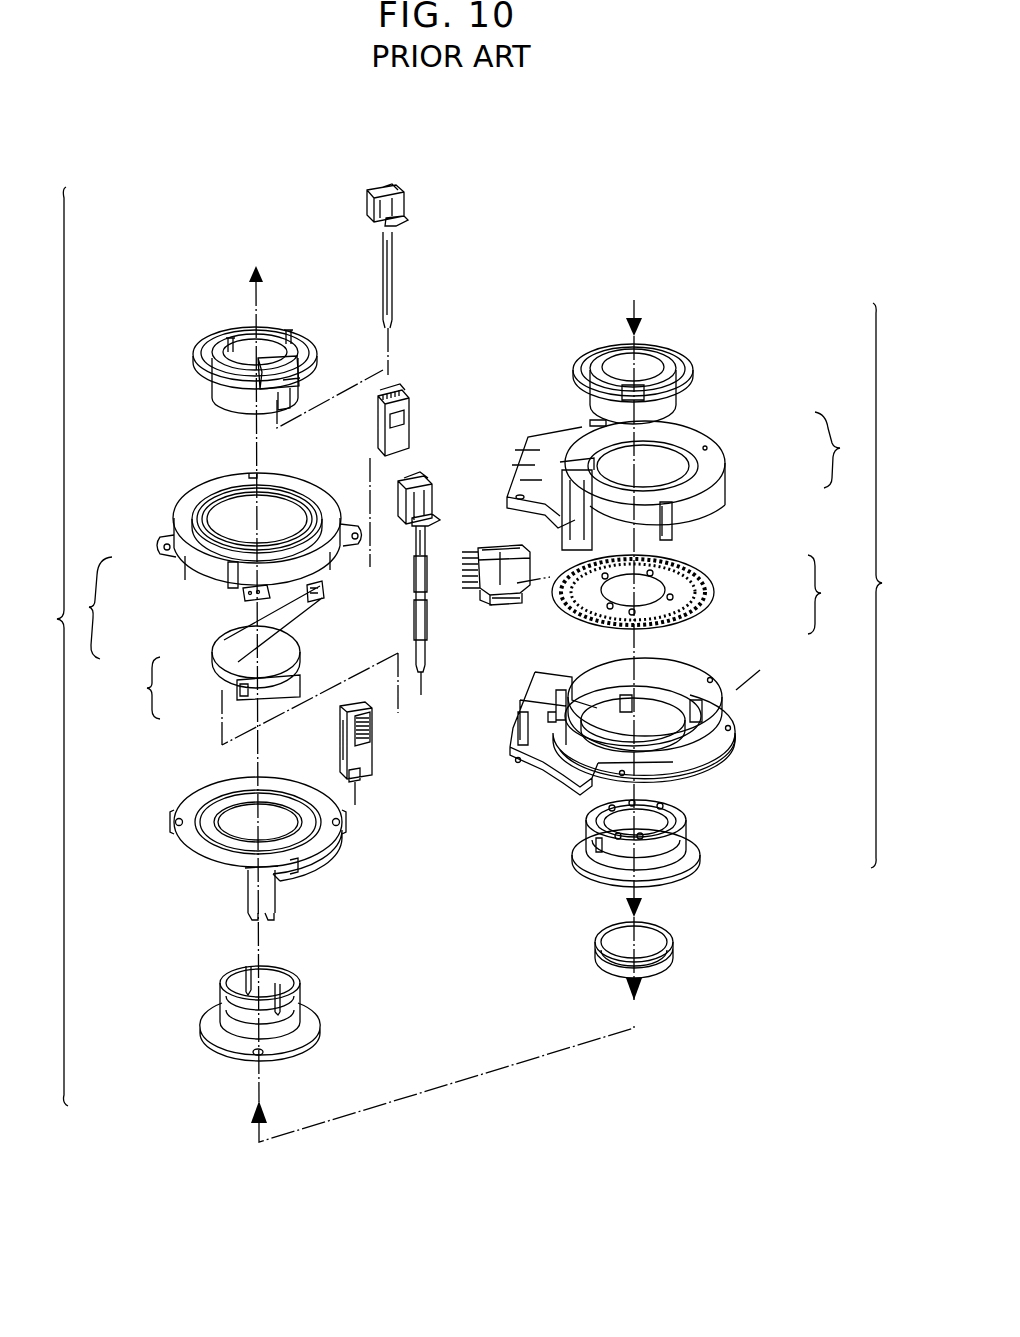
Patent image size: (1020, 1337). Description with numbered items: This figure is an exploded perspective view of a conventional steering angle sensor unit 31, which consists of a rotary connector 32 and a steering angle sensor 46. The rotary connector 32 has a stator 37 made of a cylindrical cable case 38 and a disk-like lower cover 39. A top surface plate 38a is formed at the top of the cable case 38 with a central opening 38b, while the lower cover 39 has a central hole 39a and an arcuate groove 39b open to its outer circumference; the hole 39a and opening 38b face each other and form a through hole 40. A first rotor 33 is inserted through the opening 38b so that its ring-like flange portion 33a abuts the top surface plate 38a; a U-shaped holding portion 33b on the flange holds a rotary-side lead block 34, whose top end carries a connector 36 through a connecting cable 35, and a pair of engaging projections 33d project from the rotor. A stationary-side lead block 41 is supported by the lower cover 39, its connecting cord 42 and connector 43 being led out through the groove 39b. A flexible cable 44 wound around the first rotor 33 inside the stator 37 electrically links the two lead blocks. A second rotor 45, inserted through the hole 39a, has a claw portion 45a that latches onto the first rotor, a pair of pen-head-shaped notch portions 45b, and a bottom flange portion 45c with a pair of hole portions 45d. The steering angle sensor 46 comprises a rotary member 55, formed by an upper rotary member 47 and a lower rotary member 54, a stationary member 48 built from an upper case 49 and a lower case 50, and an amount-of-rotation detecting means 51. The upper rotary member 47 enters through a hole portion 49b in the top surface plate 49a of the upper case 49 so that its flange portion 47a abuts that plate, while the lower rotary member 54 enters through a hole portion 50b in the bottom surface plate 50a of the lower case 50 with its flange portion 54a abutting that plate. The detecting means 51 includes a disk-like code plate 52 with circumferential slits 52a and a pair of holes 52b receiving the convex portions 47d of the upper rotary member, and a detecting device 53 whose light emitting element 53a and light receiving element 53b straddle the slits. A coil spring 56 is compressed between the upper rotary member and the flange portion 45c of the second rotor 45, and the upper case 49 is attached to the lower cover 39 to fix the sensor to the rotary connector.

The steering angle sensor unit 31 is at (589, 174).
The rotary connector 32 is at (45, 646).
The first rotor 33 is at (267, 336).
The flange portion 33a is at (318, 357).
The holding portion 33b is at (298, 369).
The engaging projections 33d is at (243, 350).
The rotary-side lead block 34 is at (410, 434).
The connecting cable 35 is at (393, 284).
The connector 36 is at (405, 206).
The stator 37 is at (88, 608).
The cable case 38 is at (234, 557).
The top surface plate 38a is at (310, 494).
The opening 38b is at (232, 526).
The lower cover 39 is at (251, 774).
The hole 39a is at (235, 812).
The arcuate groove 39b is at (345, 836).
The through hole 40 is at (136, 688).
The stationary-side lead block 41 is at (372, 750).
The connecting cord 42 is at (415, 613).
The connector 43 is at (433, 493).
The flexible cable 44 is at (294, 640).
The second rotor 45 is at (272, 999).
The claw portion 45a is at (240, 1012).
The notch portions 45b is at (246, 982).
The flange portion 45c is at (312, 1010).
The hole portions 45d is at (255, 1054).
The steering angle sensor 46 is at (891, 585).
The upper rotary member 47 is at (688, 679).
The flange portion 47a is at (590, 863).
The convex portions 47d is at (630, 818).
The stationary member 48 is at (829, 594).
The upper case 49 is at (632, 700).
The top surface plate 49a is at (712, 748).
The hole portion 49b is at (610, 720).
The lower case 50 is at (657, 484).
The bottom surface plate 50a is at (545, 440).
The hole portion 50b is at (656, 456).
The amount-of-rotation detecting means 51 is at (763, 667).
The code plate 52 is at (636, 580).
The slits 52a is at (682, 572).
The holes 52b is at (627, 602).
The detecting device 53 is at (597, 591).
The light emitting element 53a is at (492, 601).
The light receiving element 53b is at (492, 555).
The lower rotary member 54 is at (696, 384).
The flange portion 54a is at (690, 358).
The rotary member 55 is at (843, 450).
The coil spring 56 is at (668, 930).